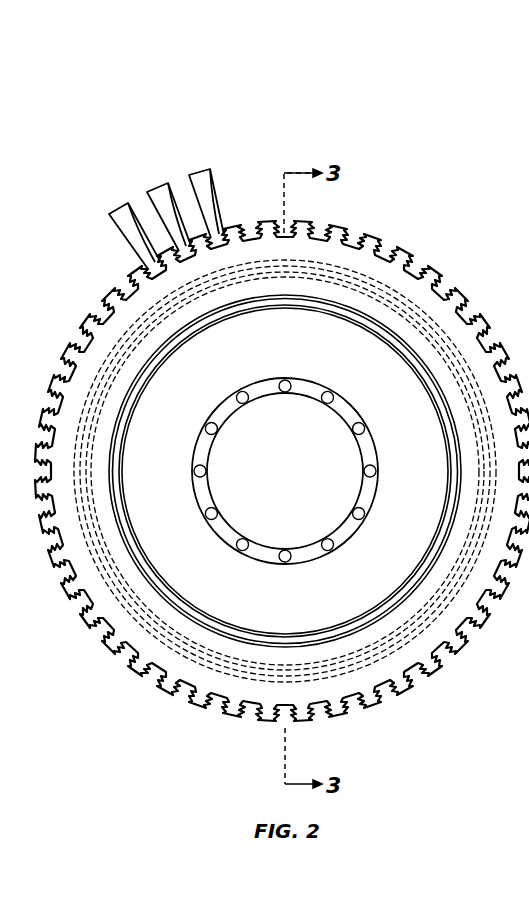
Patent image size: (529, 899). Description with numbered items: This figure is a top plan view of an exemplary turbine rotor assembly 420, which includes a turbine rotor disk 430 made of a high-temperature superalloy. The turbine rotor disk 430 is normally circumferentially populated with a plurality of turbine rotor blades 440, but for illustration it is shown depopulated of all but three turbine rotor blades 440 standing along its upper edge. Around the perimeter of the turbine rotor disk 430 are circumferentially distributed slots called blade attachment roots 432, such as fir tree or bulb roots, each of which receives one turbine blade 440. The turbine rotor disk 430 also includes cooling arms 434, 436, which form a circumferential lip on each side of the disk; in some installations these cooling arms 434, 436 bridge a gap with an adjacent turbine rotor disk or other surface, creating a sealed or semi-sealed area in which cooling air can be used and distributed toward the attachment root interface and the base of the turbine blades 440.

The turbine rotor assembly 420 is at (140, 103).
The turbine rotor disk 430 is at (218, 603).
The blade attachment roots 432 is at (415, 258).
The cooling arm 434 is at (365, 657).
The cooling arm 436 is at (251, 637).
The turbine rotor blades 440 is at (152, 188).